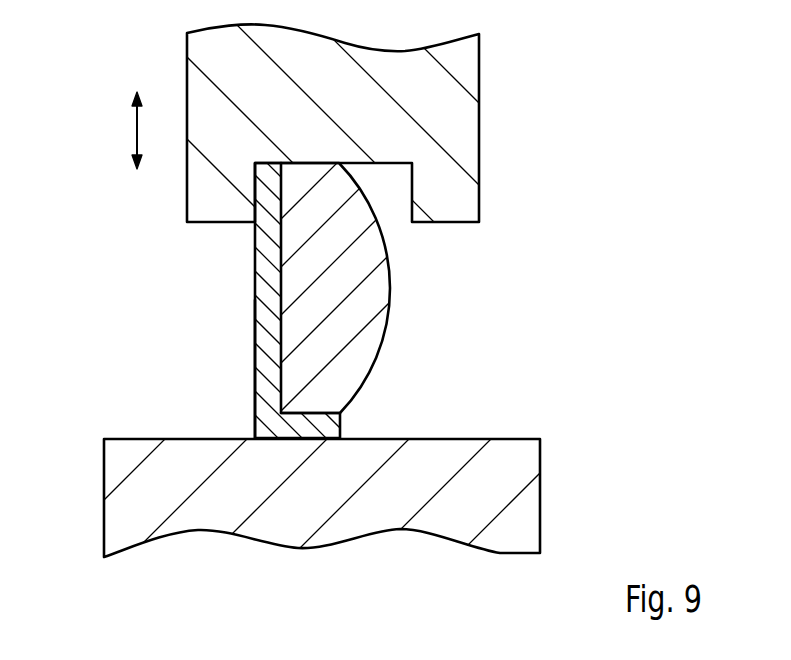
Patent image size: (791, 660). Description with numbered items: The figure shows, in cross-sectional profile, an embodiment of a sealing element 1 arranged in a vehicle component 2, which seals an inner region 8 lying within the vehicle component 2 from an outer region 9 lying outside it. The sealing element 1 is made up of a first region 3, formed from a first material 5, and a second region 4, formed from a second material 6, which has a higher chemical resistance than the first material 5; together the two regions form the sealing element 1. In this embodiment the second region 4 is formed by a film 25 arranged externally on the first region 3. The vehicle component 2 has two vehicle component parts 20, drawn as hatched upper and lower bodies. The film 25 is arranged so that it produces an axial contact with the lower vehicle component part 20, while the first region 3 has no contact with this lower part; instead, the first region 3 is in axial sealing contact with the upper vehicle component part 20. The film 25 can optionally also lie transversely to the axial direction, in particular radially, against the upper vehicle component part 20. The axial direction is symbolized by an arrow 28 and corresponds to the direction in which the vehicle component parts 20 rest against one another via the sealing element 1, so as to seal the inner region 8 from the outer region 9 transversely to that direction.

The sealing element 1 is at (348, 375).
The vehicle component 2 is at (497, 123).
The first region 3 is at (410, 282).
The first material 5 is at (373, 297).
The second region 4 is at (281, 377).
The second material 6 is at (262, 340).
The inner region 8 is at (559, 329).
The outer region 9 is at (65, 338).
The vehicle component part 20 is at (458, 187).
The film 25 is at (262, 385).
The arrow 28 is at (137, 129).